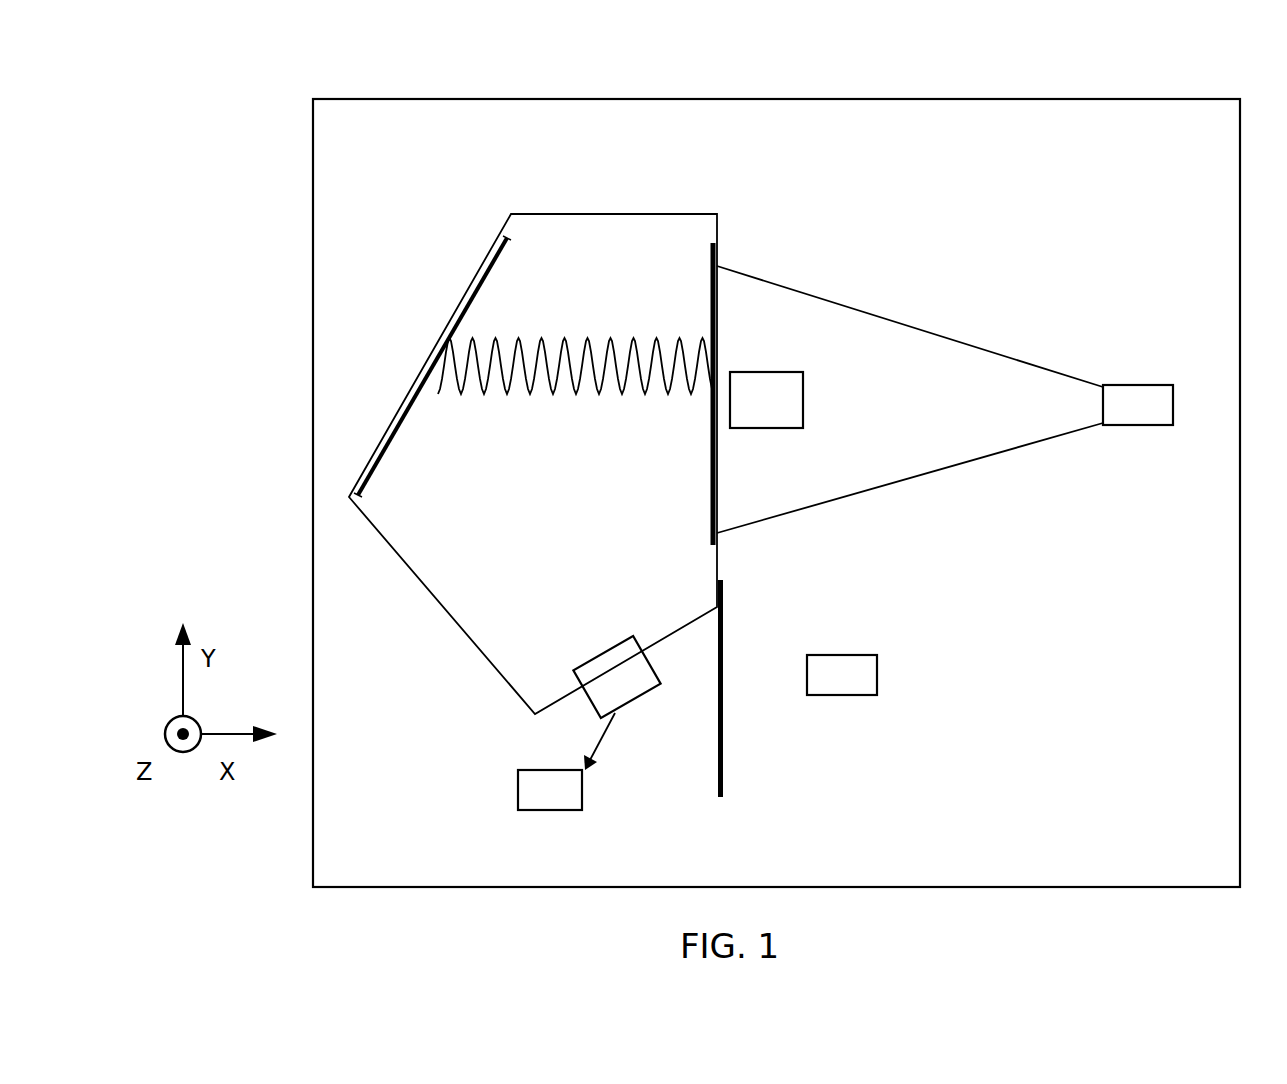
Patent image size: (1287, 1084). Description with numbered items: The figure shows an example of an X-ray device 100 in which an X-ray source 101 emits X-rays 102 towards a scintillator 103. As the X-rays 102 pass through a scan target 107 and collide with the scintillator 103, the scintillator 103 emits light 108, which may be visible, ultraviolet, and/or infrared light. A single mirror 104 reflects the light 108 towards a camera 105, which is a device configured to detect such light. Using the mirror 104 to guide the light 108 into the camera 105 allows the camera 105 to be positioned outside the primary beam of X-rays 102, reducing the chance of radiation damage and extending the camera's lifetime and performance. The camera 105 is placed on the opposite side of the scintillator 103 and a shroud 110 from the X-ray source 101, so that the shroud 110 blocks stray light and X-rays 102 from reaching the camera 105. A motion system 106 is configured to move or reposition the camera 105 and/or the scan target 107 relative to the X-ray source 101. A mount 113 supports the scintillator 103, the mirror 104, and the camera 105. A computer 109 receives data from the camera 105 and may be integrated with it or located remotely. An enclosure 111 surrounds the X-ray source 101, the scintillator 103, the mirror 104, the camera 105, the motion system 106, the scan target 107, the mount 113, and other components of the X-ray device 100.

The X-ray device 100 is at (157, 95).
The X-ray source 101 is at (1157, 385).
The X-rays 102 is at (859, 305).
The scintillator 103 is at (713, 255).
The mirror 104 is at (468, 300).
The camera 105 is at (612, 647).
The motion system 106 is at (843, 655).
The scan target 107 is at (803, 400).
The light 108 is at (598, 387).
The computer 109 is at (518, 782).
The shroud 110 is at (724, 742).
The enclosure 111 is at (1240, 813).
The mount 113 is at (417, 573).